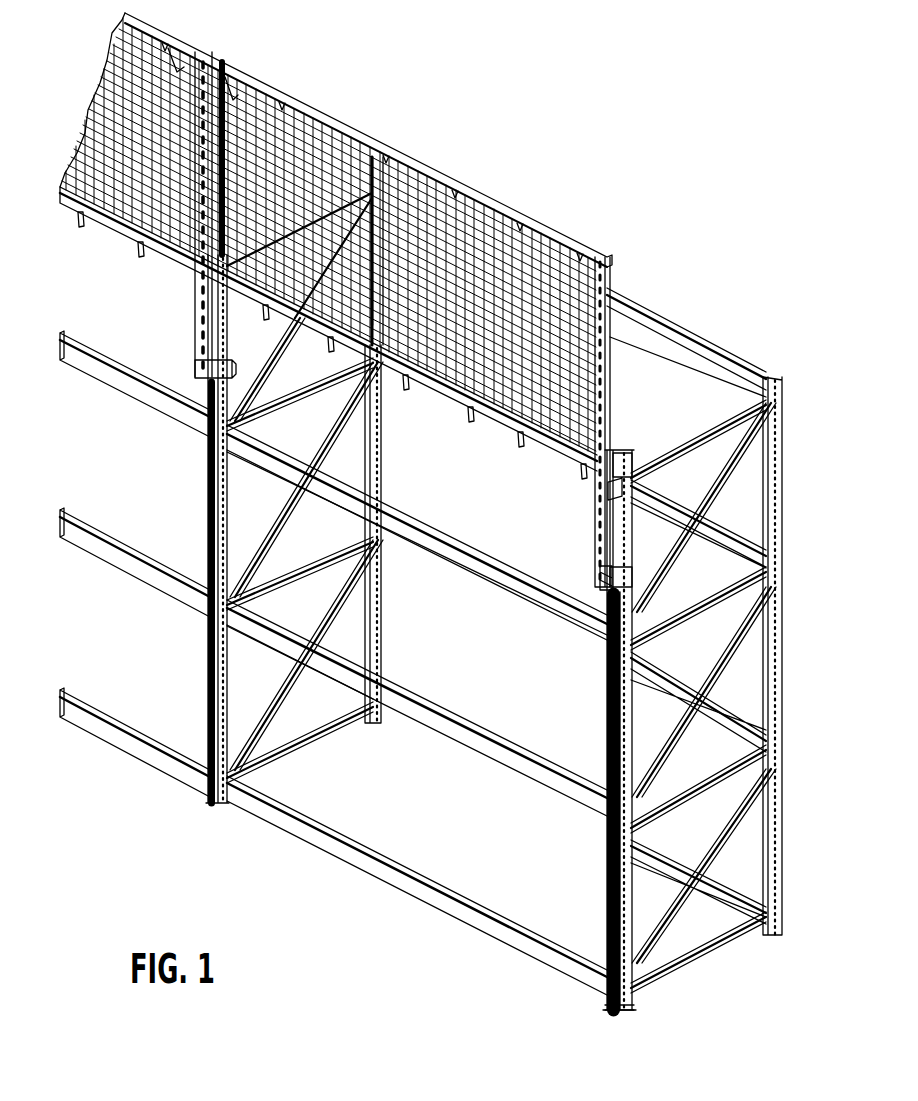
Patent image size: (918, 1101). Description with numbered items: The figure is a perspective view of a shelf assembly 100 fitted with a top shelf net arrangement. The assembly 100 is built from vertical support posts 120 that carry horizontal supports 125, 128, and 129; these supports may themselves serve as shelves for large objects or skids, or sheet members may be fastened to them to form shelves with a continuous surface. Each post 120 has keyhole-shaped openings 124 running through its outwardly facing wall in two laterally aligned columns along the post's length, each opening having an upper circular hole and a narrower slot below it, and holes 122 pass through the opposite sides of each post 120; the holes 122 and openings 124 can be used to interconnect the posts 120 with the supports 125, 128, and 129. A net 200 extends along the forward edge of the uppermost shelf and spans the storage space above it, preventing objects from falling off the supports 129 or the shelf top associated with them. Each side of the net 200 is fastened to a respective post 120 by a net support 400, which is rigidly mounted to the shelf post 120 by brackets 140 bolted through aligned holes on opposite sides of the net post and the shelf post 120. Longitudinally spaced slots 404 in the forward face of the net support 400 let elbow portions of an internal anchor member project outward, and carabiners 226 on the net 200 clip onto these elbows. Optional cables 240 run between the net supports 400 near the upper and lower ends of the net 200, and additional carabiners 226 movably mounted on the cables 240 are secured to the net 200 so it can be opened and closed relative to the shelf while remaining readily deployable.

The shelf assembly 100 is at (603, 176).
The vertical support post 120 is at (780, 485).
The hole 122 is at (632, 996).
The keyhole-shaped opening 124 is at (609, 714).
The horizontal support 125 is at (362, 872).
The horizontal support 128 is at (478, 572).
The horizontal support 129 is at (740, 365).
The bracket 140 is at (234, 368).
The net 200 is at (277, 143).
The carabiner 226 is at (374, 152).
The cable 240 is at (462, 185).
The net support 400 is at (616, 340).
The slot 404 is at (602, 575).